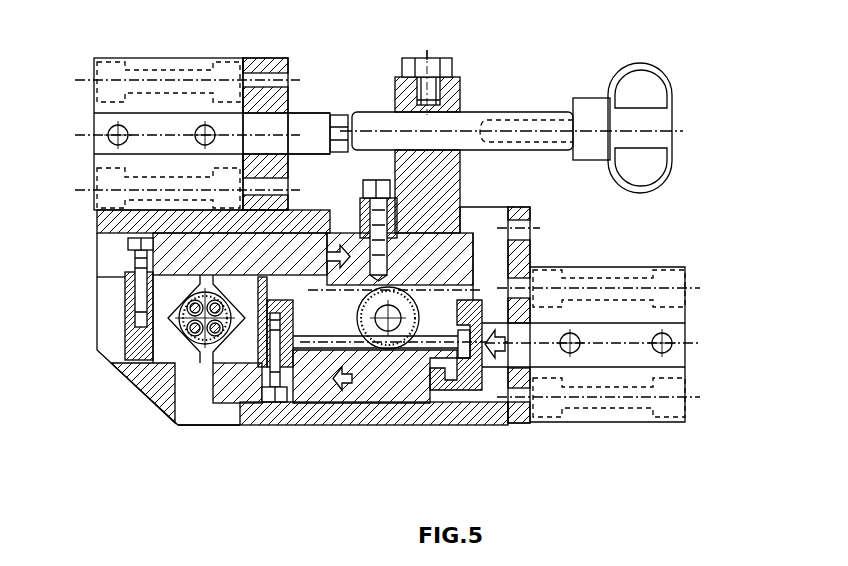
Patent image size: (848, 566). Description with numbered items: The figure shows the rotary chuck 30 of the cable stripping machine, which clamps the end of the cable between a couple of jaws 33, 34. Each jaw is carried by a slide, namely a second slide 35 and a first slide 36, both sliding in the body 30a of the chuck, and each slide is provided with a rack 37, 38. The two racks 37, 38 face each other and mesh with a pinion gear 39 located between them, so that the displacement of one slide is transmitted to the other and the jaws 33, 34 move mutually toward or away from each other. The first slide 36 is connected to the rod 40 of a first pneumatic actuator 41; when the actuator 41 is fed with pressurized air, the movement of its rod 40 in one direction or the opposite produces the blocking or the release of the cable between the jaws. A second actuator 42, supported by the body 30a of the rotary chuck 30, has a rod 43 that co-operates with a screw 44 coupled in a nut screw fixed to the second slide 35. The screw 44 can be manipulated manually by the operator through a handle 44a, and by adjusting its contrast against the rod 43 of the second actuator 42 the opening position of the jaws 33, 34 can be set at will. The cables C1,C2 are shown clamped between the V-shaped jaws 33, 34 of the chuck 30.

The rotary chuck 30 is at (523, 440).
The body 30a is at (330, 420).
The jaw 33 is at (167, 347).
The jaw 34 is at (240, 342).
The second slide 35 is at (293, 232).
The first slide 36 is at (372, 388).
The rack 37 is at (467, 233).
The rack 38 is at (420, 340).
The pinion gear 39 is at (412, 312).
The rod 40 is at (480, 333).
The first pneumatic actuator 41 is at (675, 433).
The second actuator 42 is at (92, 110).
The rod 43 is at (303, 122).
The screw 44 is at (465, 122).
The handle 44a is at (645, 88).
The cables C1,C2 is at (168, 322).